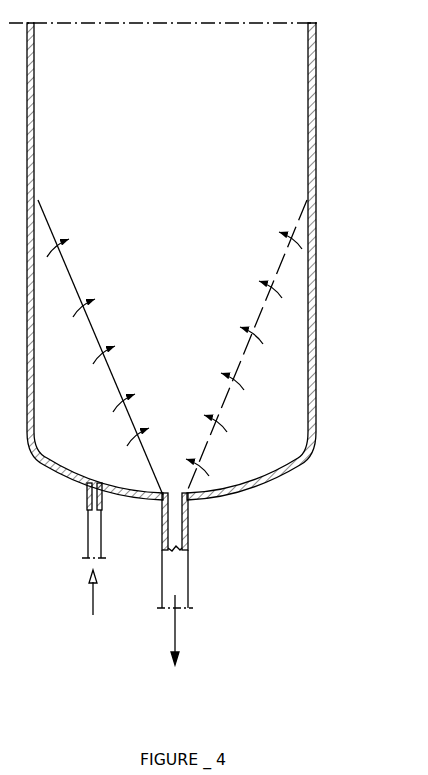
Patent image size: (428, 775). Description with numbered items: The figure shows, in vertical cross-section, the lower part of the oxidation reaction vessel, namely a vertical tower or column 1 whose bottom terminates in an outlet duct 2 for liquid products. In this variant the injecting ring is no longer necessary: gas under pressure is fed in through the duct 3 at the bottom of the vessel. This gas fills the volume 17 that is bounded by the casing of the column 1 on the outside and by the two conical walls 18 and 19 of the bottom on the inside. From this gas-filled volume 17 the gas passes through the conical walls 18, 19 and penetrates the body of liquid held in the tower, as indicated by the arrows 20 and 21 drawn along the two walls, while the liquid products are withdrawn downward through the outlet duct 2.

The vertical tower or column 1 is at (204, 261).
The outlet duct 2 is at (192, 552).
The duct 3 is at (90, 532).
The volume 17 is at (295, 371).
The conical wall 18 is at (100, 347).
The conical wall 19 is at (246, 347).
The arrow 20 is at (68, 248).
The arrow 21 is at (258, 282).